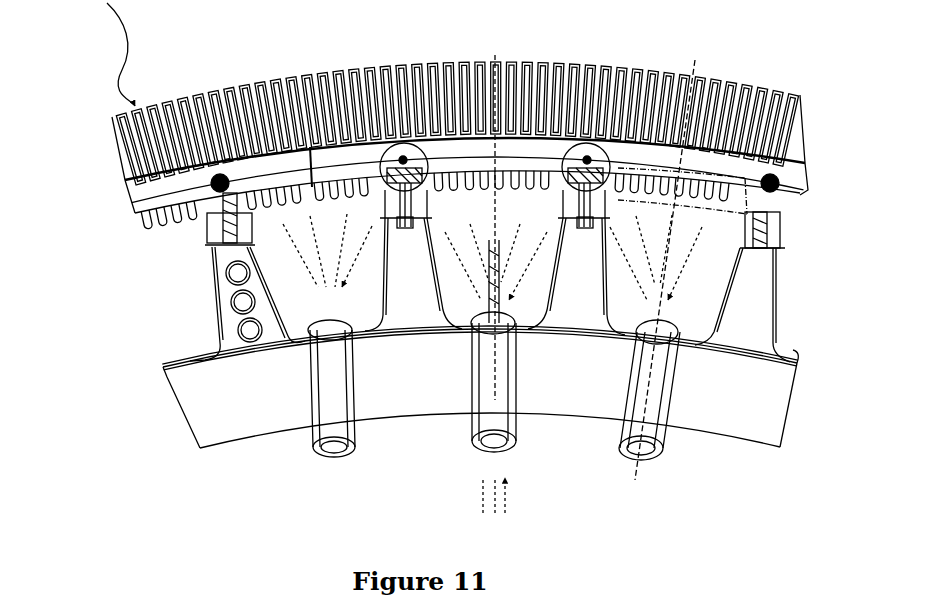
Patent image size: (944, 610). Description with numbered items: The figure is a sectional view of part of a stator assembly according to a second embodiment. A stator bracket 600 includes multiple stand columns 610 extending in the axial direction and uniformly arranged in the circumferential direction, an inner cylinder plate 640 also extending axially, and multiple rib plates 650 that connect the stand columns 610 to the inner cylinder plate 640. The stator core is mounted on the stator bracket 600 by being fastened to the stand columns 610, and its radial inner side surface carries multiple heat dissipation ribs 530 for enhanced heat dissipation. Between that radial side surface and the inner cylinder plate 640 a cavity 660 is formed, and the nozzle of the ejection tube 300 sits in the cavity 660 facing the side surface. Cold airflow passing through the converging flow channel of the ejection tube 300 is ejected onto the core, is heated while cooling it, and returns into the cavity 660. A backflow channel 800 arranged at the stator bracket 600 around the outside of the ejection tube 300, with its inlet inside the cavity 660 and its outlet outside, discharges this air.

The heat dissipation ribs 530 is at (128, 224).
The stator bracket 600 is at (170, 403).
The stand columns 610 is at (776, 234).
The inner cylinder plate 640 is at (733, 415).
The rib plates 650 is at (761, 320).
The cavity 660 is at (298, 296).
The backflow channel 800 is at (470, 420).
The ejection tube 300 is at (512, 302).